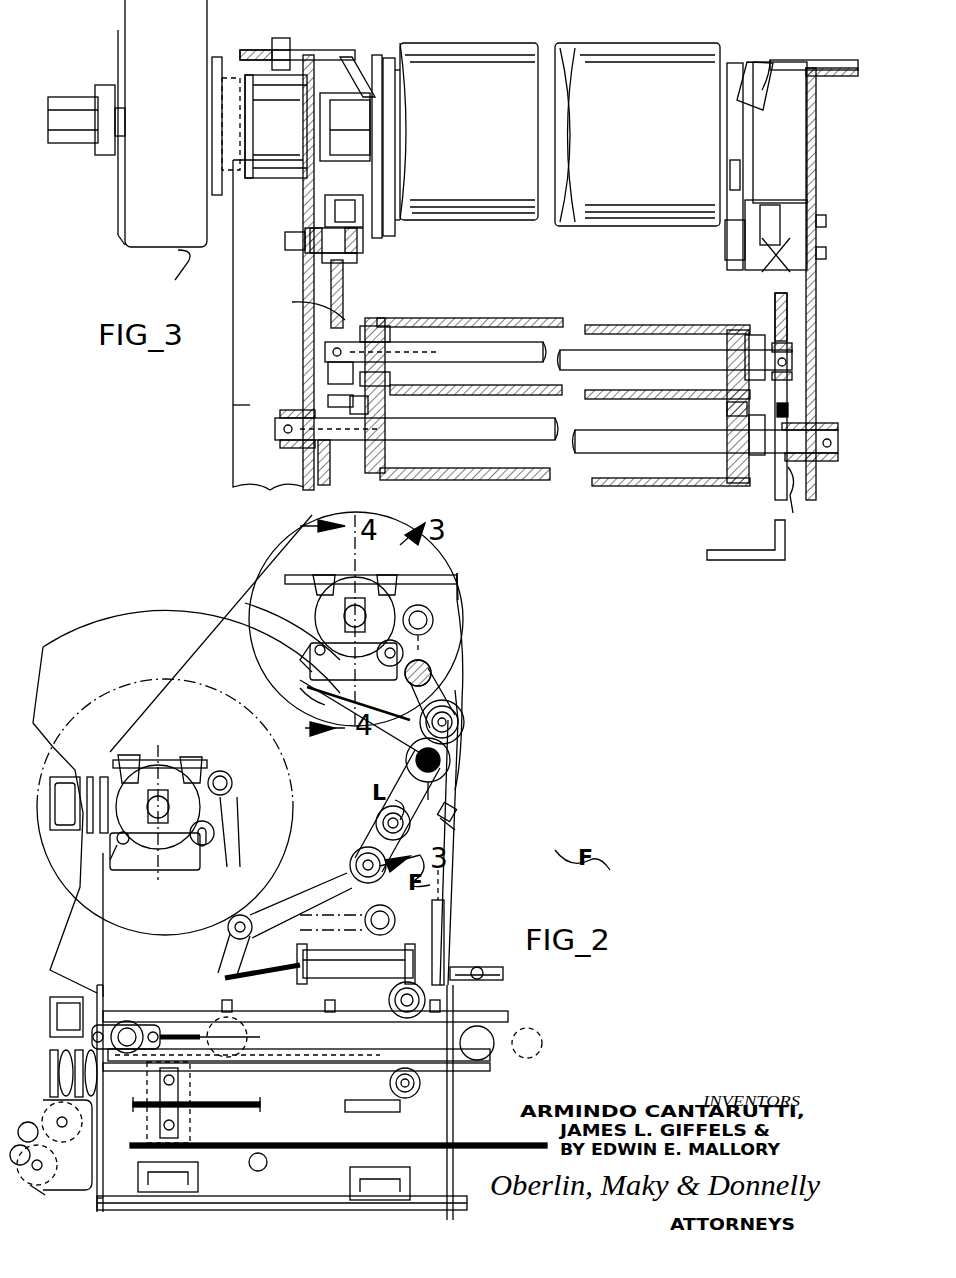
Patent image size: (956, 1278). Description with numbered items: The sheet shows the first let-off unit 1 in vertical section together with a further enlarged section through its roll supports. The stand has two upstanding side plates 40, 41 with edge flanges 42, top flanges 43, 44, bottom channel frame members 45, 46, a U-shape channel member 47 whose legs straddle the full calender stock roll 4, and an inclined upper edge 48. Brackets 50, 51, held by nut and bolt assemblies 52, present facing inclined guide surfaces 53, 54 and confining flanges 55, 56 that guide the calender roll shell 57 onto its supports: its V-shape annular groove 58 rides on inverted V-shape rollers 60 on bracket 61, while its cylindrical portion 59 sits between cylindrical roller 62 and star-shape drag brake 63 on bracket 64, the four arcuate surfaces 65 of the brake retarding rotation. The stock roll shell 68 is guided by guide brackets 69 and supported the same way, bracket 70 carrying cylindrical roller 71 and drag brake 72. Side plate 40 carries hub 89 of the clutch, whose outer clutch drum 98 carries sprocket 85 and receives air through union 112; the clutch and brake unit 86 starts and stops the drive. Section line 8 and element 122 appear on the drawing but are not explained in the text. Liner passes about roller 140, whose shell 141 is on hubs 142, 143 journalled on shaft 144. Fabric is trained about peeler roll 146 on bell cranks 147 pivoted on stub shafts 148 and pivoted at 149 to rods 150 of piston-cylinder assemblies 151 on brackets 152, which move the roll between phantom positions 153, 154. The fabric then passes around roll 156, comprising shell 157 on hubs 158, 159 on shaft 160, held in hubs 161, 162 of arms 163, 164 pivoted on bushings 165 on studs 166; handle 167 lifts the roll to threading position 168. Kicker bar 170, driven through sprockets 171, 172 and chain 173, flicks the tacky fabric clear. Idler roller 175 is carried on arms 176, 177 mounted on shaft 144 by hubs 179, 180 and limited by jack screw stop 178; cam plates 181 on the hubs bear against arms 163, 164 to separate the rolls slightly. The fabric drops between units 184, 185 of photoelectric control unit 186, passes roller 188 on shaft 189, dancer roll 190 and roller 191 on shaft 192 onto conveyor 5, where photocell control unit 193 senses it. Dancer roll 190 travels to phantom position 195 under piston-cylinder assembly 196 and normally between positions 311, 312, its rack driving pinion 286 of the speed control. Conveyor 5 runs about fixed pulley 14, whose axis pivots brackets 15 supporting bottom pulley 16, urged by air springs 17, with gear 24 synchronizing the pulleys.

In FIG. 2, the first let-off unit 1 is at (488, 712).
In FIG. 2, the calender stock roll 4 is at (115, 607).
In FIG. 2, the conveyor 5 is at (450, 1108).
In FIG. 2, the section line 8 is at (40, 1022).
In FIG. 2, the fixed pulley 14 is at (72, 1160).
In FIG. 2, the brackets 15 is at (97, 1198).
In FIG. 2, the bottom pulley 16 is at (36, 1188).
In FIG. 2, the air springs 17 is at (90, 1075).
In FIG. 2, the gear 24 is at (45, 1112).
In FIG. 3, the side plate 40 is at (302, 318).
In FIG. 3, the side plate 41 is at (813, 348).
In FIG. 2, the side plate 41 is at (443, 1142).
In FIG. 3, the edge flanges 42 is at (233, 405).
In FIG. 3, the top flange 43 is at (292, 50).
In FIG. 3, the top flange 44 is at (853, 65).
In FIG. 2, the top flange 44 is at (455, 575).
In FIG. 2, the channel frame member 45 is at (197, 1170).
In FIG. 2, the channel frame member 46 is at (350, 1187).
In FIG. 2, the U-shape channel member 47 is at (50, 820).
In FIG. 2, the inclined upper edge 48 is at (245, 603).
In FIG. 3, the bracket 50 is at (335, 55).
In FIG. 3, the bracket 51 is at (806, 60).
In FIG. 2, the bracket 51 is at (388, 578).
In FIG. 3, the nut and bolt assemblies 52 is at (283, 40).
In FIG. 3, the guide surface 53 is at (376, 65).
In FIG. 3, the guide surface 54 is at (765, 60).
In FIG. 3, the inclined flange 55 is at (390, 58).
In FIG. 3, the inclined flange 56 is at (755, 62).
In FIG. 2, the inclined flange 56 is at (320, 575).
In FIG. 3, the calender roll shell 57 is at (580, 228).
In FIG. 2, the calender roll shell 57 is at (315, 612).
In FIG. 3, the V-shape annular groove 58 is at (400, 128).
In FIG. 3, the cylindrical portion 59 is at (752, 140).
In FIG. 2, the cylindrical portion 59 is at (425, 605).
In FIG. 3, the inverted V-shape rollers 60 is at (392, 235).
In FIG. 3, the bracket 61 is at (323, 210).
In FIG. 3, the cylindrical roller 62 is at (727, 235).
In FIG. 2, the cylindrical roller 62 is at (406, 652).
In FIG. 3, the star-shape drag brake 63 is at (736, 266).
In FIG. 2, the star-shape drag brake 63 is at (312, 650).
In FIG. 3, the bracket 64 is at (772, 266).
In FIG. 2, the bracket 64 is at (332, 680).
In FIG. 2, the arcuate surfaces 65 is at (300, 688).
In FIG. 2, the calender roll shell 68 is at (165, 758).
In FIG. 2, the guide brackets 69 is at (130, 760).
In FIG. 2, the bracket 70 is at (175, 870).
In FIG. 2, the cylindrical roller 71 is at (216, 832).
In FIG. 2, the star-shape drag brake 72 is at (118, 870).
In FIG. 3, the sprocket 85 is at (220, 200).
In FIG. 3, the clutch and brake unit 86 is at (117, 228).
In FIG. 3, the hub 89 is at (300, 129).
In FIG. 3, the outer clutch drum 98 is at (198, 265).
In FIG. 3, the union 112 is at (75, 97).
In FIG. 3, the block 122 is at (345, 141).
In FIG. 3, the roller 140 is at (600, 490).
In FIG. 2, the roller 140 is at (440, 780).
In FIG. 3, the shell 141 is at (508, 482).
In FIG. 3, the hub 142 is at (385, 448).
In FIG. 3, the hub 143 is at (728, 458).
In FIG. 3, the shaft 144 is at (497, 442).
In FIG. 2, the shaft 144 is at (450, 762).
In FIG. 2, the peeler roll 146 is at (365, 883).
In FIG. 2, the bell cranks 147 is at (300, 888).
In FIG. 2, the stub shafts 148 is at (246, 932).
In FIG. 2, the pivot 149 is at (225, 976).
In FIG. 2, the rods 150 is at (230, 1010).
In FIG. 2, the piston-cylinder assemblies 151 is at (331, 997).
In FIG. 2, the brackets 152 is at (446, 958).
In FIG. 2, the phantom line position 153 is at (395, 922).
In FIG. 2, the phantom line position 154 is at (232, 786).
In FIG. 3, the roll 156 is at (636, 320).
In FIG. 2, the roll 156 is at (465, 720).
In FIG. 3, the shell 157 is at (545, 316).
In FIG. 3, the hub 158 is at (398, 342).
In FIG. 3, the hub 159 is at (730, 348).
In FIG. 3, the shaft 160 is at (660, 358).
In FIG. 3, the hub 161 is at (326, 372).
In FIG. 3, the hub 162 is at (793, 378).
In FIG. 3, the arm 163 is at (345, 296).
In FIG. 3, the arm 164 is at (788, 320).
In FIG. 2, the arm 164 is at (456, 690).
In FIG. 3, the bushings 165 is at (352, 260).
In FIG. 3, the studs 166 is at (290, 248).
In FIG. 2, the studs 166 is at (435, 662).
In FIG. 3, the handle 167 is at (762, 552).
In FIG. 2, the handle 167 is at (456, 814).
In FIG. 2, the threading position 168 is at (460, 614).
In FIG. 3, the kicker bar 170 is at (388, 404).
In FIG. 2, the kicker bar 170 is at (450, 752).
In FIG. 3, the sprocket 171 is at (305, 304).
In FIG. 3, the sprocket 172 is at (416, 428).
In FIG. 3, the drive chain 173 is at (375, 322).
In FIG. 2, the idler roller 175 is at (375, 825).
In FIG. 3, the arm 176 is at (325, 474).
In FIG. 3, the arm 177 is at (810, 497).
In FIG. 2, the arm 177 is at (385, 800).
In FIG. 2, the jack screw stop 178 is at (445, 820).
In FIG. 3, the hub 179 is at (305, 412).
In FIG. 3, the hub 180 is at (804, 412).
In FIG. 2, the cam plates 181 is at (390, 760).
In FIG. 2, the photoelectric unit 184 is at (358, 962).
In FIG. 2, the photoelectric unit 185 is at (495, 975).
In FIG. 2, the photoelectric control unit 186 is at (462, 975).
In FIG. 2, the roller 188 is at (388, 1032).
In FIG. 2, the shaft 189 is at (415, 1022).
In FIG. 2, the dancer roll 190 is at (140, 1010).
In FIG. 2, the roller 191 is at (390, 1085).
In FIG. 2, the shaft 192 is at (360, 1108).
In FIG. 2, the photocell control unit 193 is at (190, 1098).
In FIG. 2, the phantom line position 195 is at (490, 1060).
In FIG. 2, the piston-cylinder assembly 196 is at (56, 1040).
In FIG. 2, the pinion 286 is at (548, 1052).
In FIG. 2, the phantom line position 311 is at (252, 1080).
In FIG. 2, the phantom line position 312 is at (299, 1049).